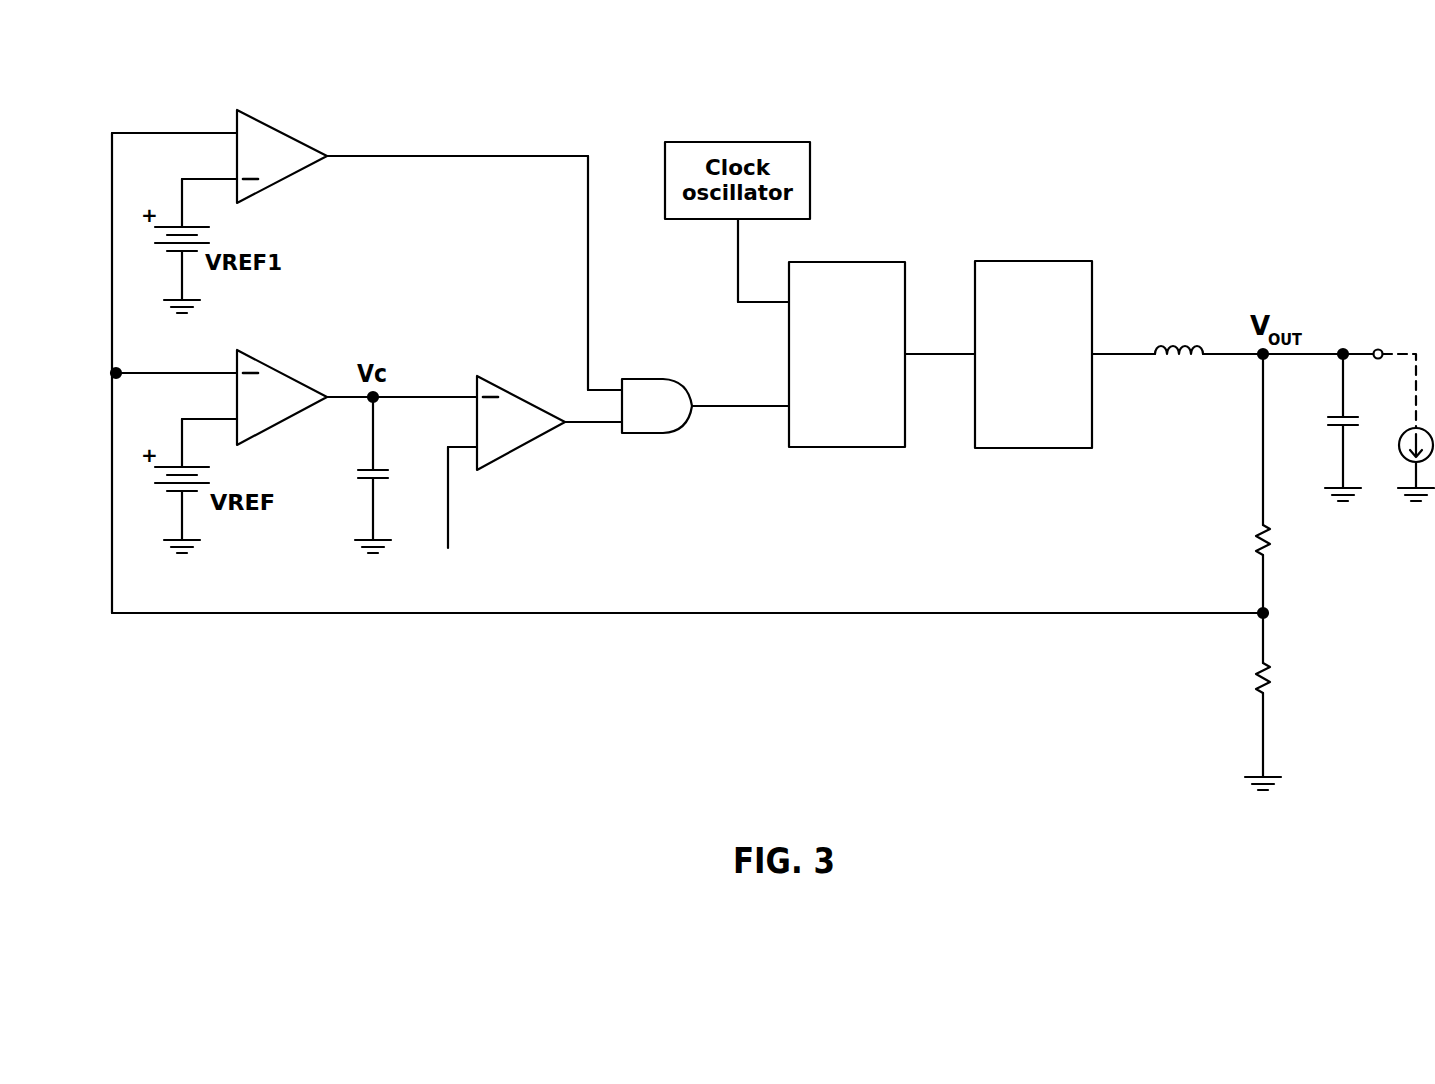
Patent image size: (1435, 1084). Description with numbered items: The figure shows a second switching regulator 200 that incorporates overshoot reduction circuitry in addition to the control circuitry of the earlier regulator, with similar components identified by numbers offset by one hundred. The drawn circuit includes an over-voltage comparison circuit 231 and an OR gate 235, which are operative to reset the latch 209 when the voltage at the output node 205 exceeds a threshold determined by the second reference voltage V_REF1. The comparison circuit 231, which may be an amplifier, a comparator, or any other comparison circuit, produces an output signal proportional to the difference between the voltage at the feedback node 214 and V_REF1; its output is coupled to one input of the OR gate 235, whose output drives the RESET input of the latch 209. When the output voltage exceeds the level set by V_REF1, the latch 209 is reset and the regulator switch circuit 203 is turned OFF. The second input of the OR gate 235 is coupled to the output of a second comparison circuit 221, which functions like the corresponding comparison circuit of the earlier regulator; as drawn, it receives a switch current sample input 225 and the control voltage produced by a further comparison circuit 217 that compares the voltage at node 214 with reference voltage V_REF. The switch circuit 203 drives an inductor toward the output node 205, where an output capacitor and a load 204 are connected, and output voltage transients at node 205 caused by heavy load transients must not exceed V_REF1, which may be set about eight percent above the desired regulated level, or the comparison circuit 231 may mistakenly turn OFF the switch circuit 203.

The second switching regulator 200 is at (806, 70).
The switch circuit 203 is at (1030, 261).
The load 204 is at (1400, 445).
The output node 205 is at (1223, 353).
The latch 209 is at (867, 447).
The node 214 is at (1270, 613).
The error amplifier 217 is at (293, 346).
The second comparison circuit 221 is at (525, 447).
The switch current sample input 225 is at (450, 547).
The over-voltage comparison circuit 231 is at (280, 130).
The OR gate 235 is at (647, 378).